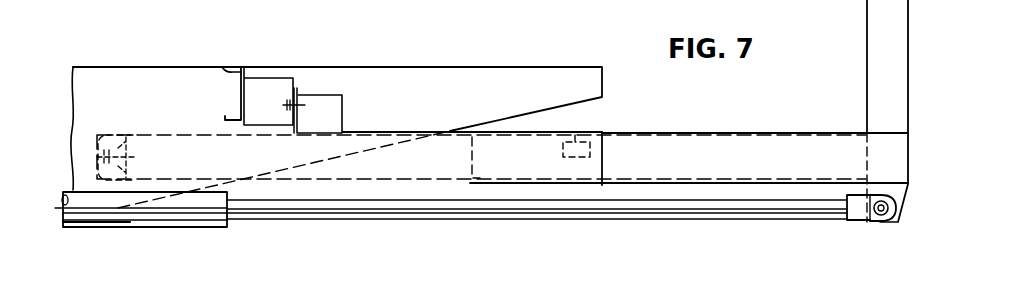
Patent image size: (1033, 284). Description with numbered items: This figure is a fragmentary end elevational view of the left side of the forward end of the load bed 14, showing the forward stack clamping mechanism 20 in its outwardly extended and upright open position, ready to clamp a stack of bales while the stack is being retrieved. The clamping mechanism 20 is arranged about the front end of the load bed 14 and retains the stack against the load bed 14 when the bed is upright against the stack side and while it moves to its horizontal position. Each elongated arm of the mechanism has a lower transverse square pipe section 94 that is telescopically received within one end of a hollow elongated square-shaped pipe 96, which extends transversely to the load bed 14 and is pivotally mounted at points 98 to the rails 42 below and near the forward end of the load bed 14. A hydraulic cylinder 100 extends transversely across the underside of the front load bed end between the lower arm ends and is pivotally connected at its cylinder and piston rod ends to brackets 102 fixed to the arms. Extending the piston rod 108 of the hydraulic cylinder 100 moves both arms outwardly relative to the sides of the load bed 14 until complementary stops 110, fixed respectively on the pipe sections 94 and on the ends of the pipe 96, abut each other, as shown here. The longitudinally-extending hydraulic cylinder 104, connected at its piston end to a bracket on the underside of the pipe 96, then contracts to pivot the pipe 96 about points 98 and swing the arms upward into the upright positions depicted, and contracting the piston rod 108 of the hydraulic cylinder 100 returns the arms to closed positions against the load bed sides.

The load bed 14 is at (336, 111).
The stack clamping mechanism 20 is at (642, 113).
The rails 42 is at (232, 72).
The lower transverse square pipe section 94 is at (802, 138).
The hollow elongated square-shaped pipe 96 is at (369, 138).
The pivot points 98 is at (300, 107).
The hydraulic cylinder 100 is at (128, 228).
The brackets 102 is at (892, 200).
The longitudinally-extending hydraulic cylinder 104 is at (139, 168).
The piston rod 108 is at (615, 214).
The stops 110 is at (575, 136).